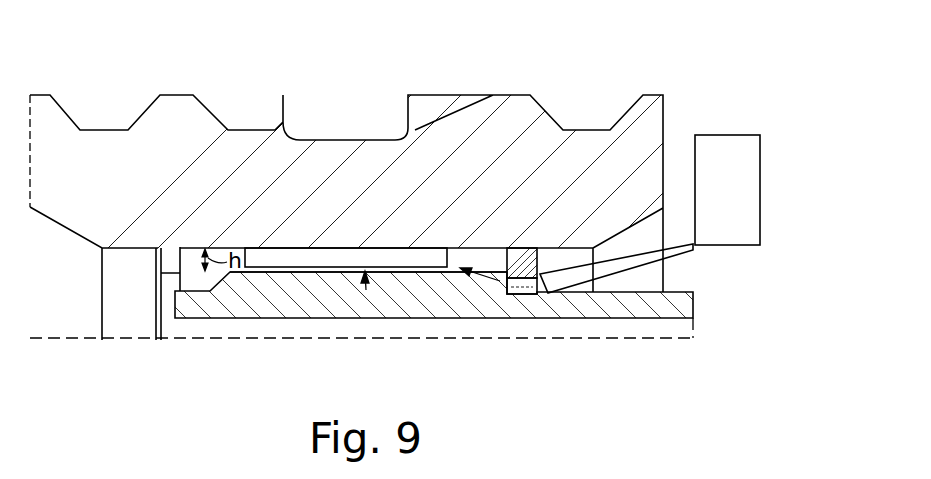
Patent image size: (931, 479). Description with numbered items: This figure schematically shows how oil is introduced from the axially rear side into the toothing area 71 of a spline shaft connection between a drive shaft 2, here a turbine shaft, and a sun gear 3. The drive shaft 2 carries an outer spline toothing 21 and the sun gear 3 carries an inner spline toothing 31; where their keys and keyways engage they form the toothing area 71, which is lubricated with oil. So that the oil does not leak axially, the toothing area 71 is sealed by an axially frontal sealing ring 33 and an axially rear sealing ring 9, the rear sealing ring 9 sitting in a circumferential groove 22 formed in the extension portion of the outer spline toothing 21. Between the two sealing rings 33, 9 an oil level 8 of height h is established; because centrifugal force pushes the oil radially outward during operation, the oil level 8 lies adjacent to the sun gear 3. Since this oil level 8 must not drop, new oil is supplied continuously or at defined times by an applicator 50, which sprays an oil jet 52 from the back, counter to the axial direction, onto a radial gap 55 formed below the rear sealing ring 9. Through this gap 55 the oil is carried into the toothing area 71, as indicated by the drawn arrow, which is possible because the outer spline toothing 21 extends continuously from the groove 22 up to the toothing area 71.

The sun gear 3 is at (515, 113).
The drive shaft 2 is at (660, 312).
The outer spline toothing 21 is at (313, 297).
The inner spline toothing 31 is at (265, 258).
The axially frontal sealing ring 33 is at (174, 262).
The oil level 8 is at (185, 272).
The toothing area 71 is at (366, 290).
The axially rear sealing ring 9 is at (507, 262).
The radial gap 55 is at (516, 294).
The groove 22 is at (527, 295).
The oil jet 52 is at (670, 253).
The applicator 50 is at (738, 245).